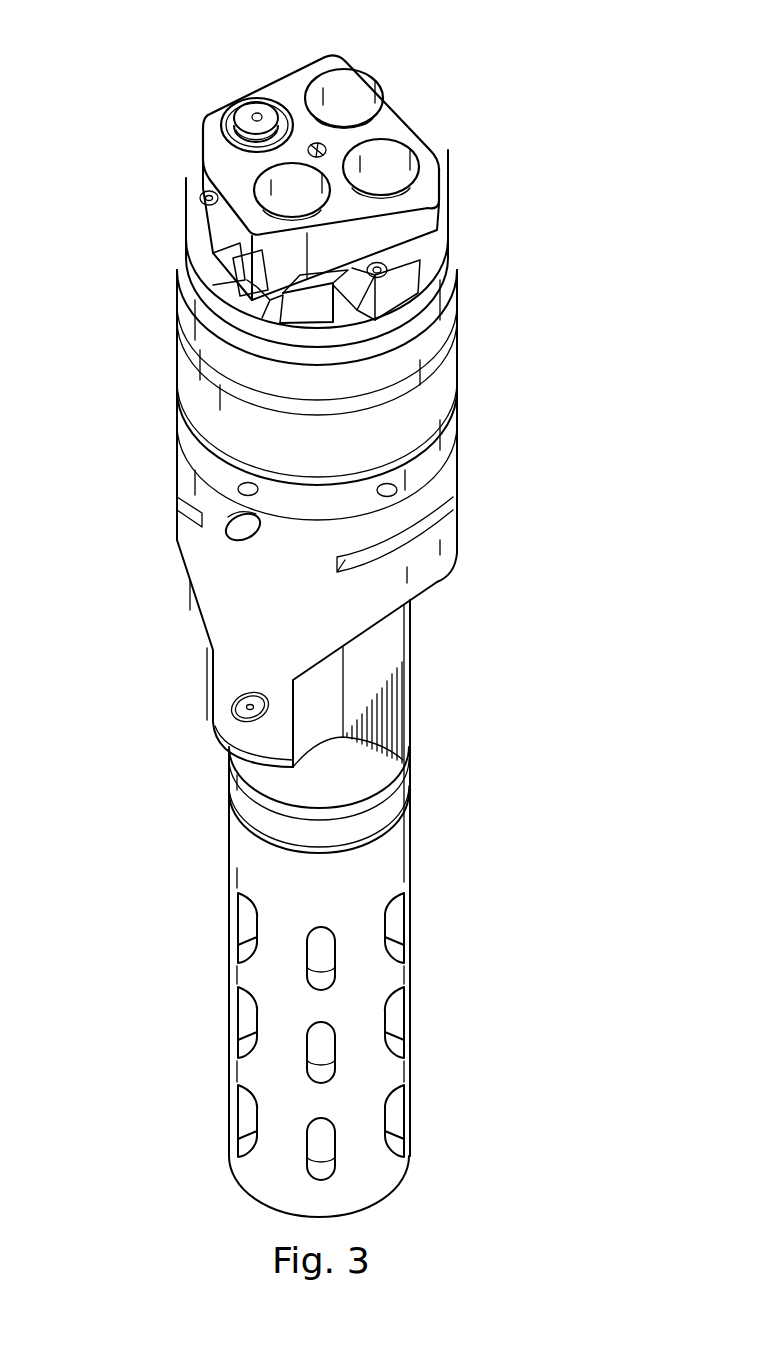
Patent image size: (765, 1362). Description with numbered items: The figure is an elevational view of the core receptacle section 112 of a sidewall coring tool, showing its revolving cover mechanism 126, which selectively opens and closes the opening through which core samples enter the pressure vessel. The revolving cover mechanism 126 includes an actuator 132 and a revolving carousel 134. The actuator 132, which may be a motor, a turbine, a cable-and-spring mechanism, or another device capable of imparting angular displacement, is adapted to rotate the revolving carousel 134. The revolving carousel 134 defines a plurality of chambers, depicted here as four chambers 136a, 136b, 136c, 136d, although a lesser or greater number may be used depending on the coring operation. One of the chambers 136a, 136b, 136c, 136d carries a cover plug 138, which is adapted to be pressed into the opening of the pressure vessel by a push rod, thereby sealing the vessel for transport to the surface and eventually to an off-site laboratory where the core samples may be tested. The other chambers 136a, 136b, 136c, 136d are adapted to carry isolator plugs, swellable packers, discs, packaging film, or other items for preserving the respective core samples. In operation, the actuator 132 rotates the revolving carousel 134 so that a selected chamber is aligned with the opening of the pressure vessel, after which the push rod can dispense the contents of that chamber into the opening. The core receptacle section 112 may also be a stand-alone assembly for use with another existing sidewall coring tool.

The core receptacle section 112 is at (517, 299).
The revolving cover mechanism 126 is at (240, 313).
The actuator 132 is at (340, 152).
The revolving carousel 134 is at (393, 123).
The chamber 136a is at (293, 127).
The chamber 136b is at (357, 100).
The chamber 136c is at (393, 162).
The chamber 136d is at (290, 183).
The cover plug 138 is at (247, 110).